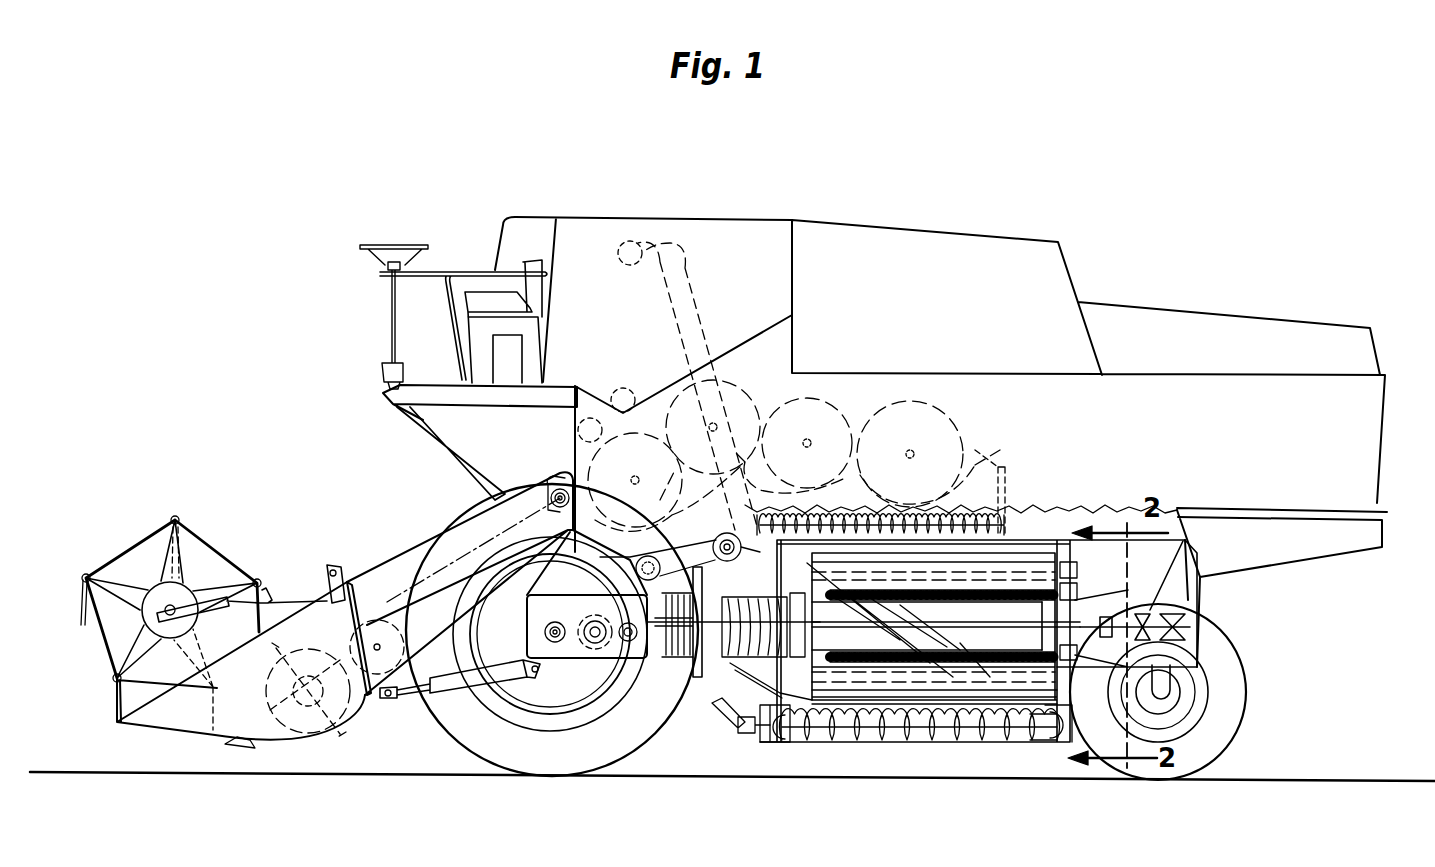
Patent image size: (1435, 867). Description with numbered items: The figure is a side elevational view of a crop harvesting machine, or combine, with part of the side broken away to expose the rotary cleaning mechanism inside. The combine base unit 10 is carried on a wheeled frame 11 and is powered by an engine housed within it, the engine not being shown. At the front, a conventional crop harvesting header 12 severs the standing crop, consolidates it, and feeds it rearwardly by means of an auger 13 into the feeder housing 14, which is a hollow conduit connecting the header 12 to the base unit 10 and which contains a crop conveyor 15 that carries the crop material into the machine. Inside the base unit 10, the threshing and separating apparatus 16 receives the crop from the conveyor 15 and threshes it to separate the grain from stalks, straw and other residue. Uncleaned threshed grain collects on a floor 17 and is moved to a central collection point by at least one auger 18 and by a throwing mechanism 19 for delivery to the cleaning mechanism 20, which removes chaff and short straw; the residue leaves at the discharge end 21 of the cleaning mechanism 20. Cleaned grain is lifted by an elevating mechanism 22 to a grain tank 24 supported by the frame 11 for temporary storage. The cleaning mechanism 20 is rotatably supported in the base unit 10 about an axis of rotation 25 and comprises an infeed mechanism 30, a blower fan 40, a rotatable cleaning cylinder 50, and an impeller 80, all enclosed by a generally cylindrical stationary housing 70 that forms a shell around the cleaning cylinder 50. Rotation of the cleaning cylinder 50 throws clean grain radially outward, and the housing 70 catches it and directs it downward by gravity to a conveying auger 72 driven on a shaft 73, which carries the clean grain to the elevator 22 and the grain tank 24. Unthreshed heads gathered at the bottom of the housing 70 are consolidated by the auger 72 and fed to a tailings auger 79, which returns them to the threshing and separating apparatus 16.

The combine base unit 10 is at (1075, 272).
The wheeled frame 11 is at (1233, 644).
The crop harvesting header 12 is at (205, 538).
The auger 13 is at (275, 692).
The feeder housing 14 is at (427, 540).
The crop conveyor 15 is at (398, 580).
The threshing and separating apparatus 16 is at (588, 458).
The floor 17 is at (1010, 520).
The auger 18 is at (1000, 482).
The throwing mechanism 19 is at (653, 558).
The cleaning mechanism 20 is at (1212, 583).
The discharge end 21 is at (1217, 677).
The elevating mechanism 22 is at (690, 258).
The grain tank 24 is at (620, 217).
The axis of rotation 25 is at (953, 624).
The infeed mechanism 30 is at (722, 663).
The blower fan 40 is at (695, 665).
The rotatable cleaning cylinder 50 is at (925, 702).
The stationary housing 70 is at (783, 724).
The conveying auger 72 is at (873, 735).
The shaft 73 is at (724, 712).
The tailings auger 79 is at (602, 428).
The impeller 80 is at (985, 642).